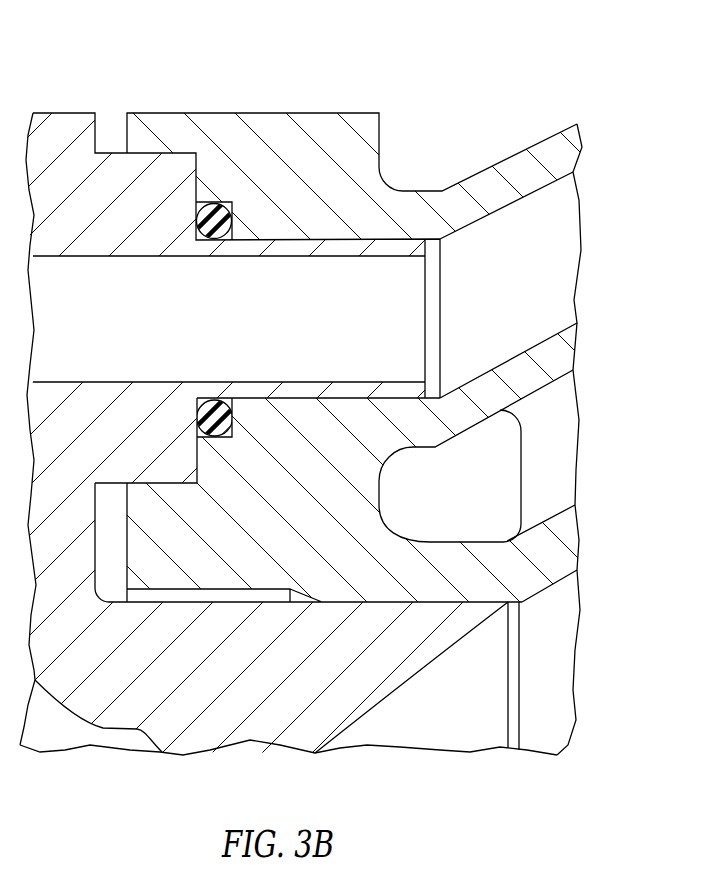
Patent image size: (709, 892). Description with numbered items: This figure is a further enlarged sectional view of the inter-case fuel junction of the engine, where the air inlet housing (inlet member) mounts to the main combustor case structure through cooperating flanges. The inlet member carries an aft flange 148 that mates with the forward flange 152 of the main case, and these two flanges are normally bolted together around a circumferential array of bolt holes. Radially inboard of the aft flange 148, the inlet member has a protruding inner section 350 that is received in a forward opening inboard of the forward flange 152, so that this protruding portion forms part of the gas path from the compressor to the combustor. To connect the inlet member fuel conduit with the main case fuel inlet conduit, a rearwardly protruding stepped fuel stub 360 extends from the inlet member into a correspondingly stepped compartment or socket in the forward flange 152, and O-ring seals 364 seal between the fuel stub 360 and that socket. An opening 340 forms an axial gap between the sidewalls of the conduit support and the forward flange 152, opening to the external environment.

The aft flange 148 is at (60, 102).
The forward flange 152 is at (238, 104).
The opening 340 is at (477, 512).
The protruding inner section 350 is at (272, 688).
The stepped fuel stub 360 is at (163, 438).
The seals 364 is at (217, 438).